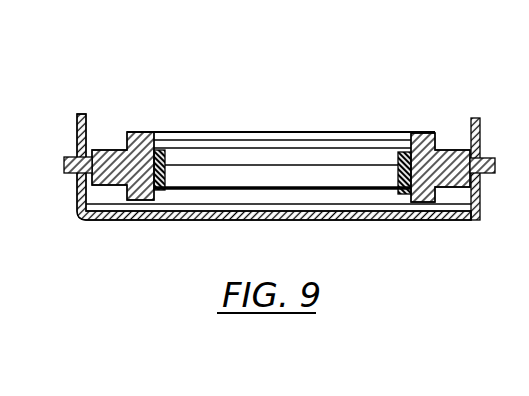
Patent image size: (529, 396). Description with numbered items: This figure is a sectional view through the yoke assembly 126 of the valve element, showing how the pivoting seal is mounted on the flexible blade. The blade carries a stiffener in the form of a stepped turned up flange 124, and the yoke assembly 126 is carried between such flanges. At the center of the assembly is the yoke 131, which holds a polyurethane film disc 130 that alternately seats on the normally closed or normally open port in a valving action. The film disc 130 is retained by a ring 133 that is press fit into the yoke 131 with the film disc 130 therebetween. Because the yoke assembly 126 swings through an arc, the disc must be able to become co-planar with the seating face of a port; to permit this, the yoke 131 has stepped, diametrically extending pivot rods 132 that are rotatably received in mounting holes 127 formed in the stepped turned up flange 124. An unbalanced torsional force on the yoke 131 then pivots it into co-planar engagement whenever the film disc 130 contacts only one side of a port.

The stepped turned up flange 124 is at (483, 193).
The yoke assembly 126 is at (279, 100).
The mounting holes 127 is at (486, 156).
The polyurethane film disc 130 is at (228, 188).
The yoke 131 is at (131, 132).
The stepped pivot rods 132 is at (108, 150).
The ring 133 is at (163, 150).